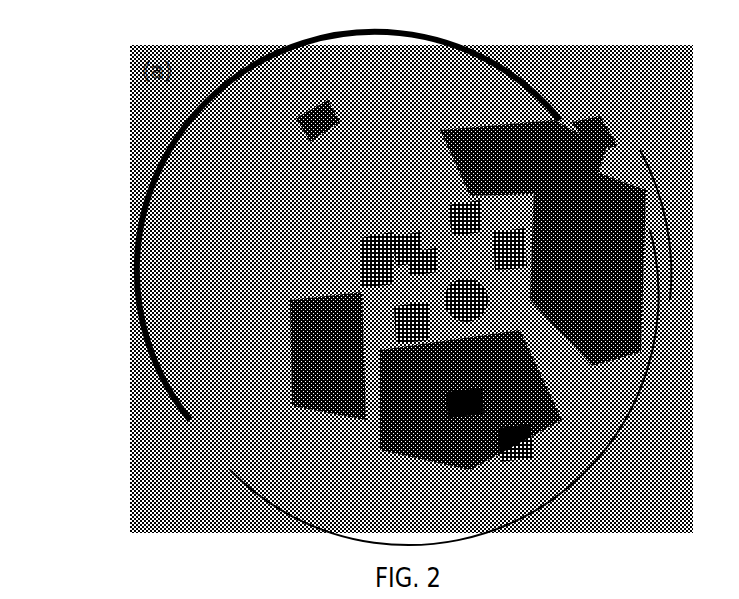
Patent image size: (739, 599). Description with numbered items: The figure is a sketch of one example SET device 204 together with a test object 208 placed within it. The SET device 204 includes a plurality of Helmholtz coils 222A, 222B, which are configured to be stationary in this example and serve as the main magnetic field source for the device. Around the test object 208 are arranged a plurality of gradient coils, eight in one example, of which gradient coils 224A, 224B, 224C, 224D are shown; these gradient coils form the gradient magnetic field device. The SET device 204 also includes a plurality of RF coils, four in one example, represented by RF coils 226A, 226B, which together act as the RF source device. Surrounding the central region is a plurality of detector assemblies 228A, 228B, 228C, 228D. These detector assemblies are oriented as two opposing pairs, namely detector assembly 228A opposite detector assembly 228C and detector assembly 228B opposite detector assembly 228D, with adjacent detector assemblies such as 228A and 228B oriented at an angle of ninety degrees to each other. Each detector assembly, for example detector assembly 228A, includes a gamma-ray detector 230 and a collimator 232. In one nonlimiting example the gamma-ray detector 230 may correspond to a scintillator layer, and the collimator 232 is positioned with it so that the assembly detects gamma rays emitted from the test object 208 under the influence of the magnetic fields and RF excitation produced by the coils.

The SET device 204 is at (94, 30).
The test object 208 is at (462, 328).
The Helmholtz coil 222A is at (309, 112).
The Helmholtz coil 222B is at (599, 126).
The gradient coil 224A is at (358, 259).
The gradient coil 224B is at (394, 323).
The gradient coil 224C is at (457, 221).
The gradient coil 224D is at (500, 244).
The RF coil 226A is at (397, 241).
The RF coil 226B is at (413, 260).
The detector assembly 228A is at (568, 407).
The detector assembly 228B is at (631, 289).
The detector assembly 228C is at (517, 128).
The detector assembly 228D is at (302, 348).
The gamma-ray detector 230 is at (514, 448).
The collimator 232 is at (475, 402).